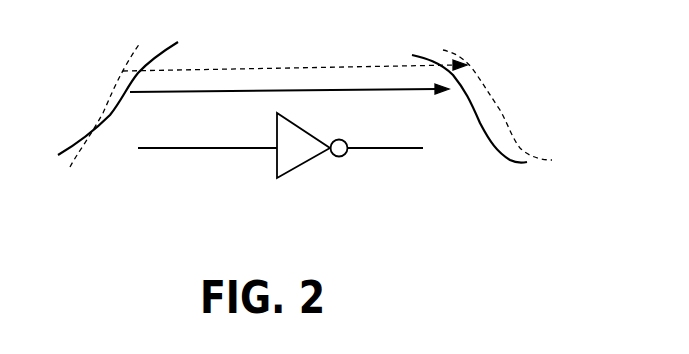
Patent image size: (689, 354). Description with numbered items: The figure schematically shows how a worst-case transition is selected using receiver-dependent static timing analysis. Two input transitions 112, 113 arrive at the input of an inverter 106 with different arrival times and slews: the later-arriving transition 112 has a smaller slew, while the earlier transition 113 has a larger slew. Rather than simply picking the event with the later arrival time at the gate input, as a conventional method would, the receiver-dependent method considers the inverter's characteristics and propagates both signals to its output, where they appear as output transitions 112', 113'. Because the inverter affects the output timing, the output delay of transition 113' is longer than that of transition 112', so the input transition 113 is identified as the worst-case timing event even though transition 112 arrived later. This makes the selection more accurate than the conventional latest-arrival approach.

The inverter 106 is at (327, 123).
The transition 112 is at (156, 84).
The transition 113 is at (100, 94).
The output transition 112' is at (469, 123).
The output transition 113' is at (524, 105).